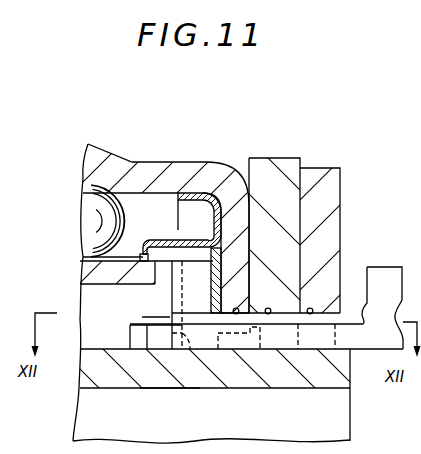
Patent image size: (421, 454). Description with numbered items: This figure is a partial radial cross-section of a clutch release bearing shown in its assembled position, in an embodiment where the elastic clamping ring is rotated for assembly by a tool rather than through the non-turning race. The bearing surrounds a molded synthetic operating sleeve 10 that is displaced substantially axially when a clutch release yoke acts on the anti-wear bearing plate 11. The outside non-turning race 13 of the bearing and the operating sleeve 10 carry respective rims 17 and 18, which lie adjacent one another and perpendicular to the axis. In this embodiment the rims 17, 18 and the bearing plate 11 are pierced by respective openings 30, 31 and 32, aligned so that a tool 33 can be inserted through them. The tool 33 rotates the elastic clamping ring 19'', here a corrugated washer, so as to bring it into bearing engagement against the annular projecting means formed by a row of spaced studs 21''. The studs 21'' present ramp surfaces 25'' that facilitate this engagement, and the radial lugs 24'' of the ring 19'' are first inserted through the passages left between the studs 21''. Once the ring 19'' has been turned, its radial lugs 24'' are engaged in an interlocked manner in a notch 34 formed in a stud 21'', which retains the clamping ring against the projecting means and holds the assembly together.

The operating sleeve 10 is at (110, 380).
The anti-wear bearing plate 11 is at (317, 173).
The outside non-turning race 13 is at (179, 163).
The rim of the non-turning race 17 is at (222, 220).
The rim of the operating sleeve 18 is at (268, 168).
The elastic clamping ring 19'' is at (138, 299).
The studs 21'' is at (227, 365).
The radial lugs 24'' is at (132, 305).
The ramp surfaces 25'' is at (166, 378).
The opening in rim of non-turning race 30 is at (236, 308).
The opening in rim of operating sleeve 31 is at (268, 308).
The opening in bearing plate 32 is at (310, 308).
The tool 33 is at (379, 267).
The notch 34 is at (184, 336).